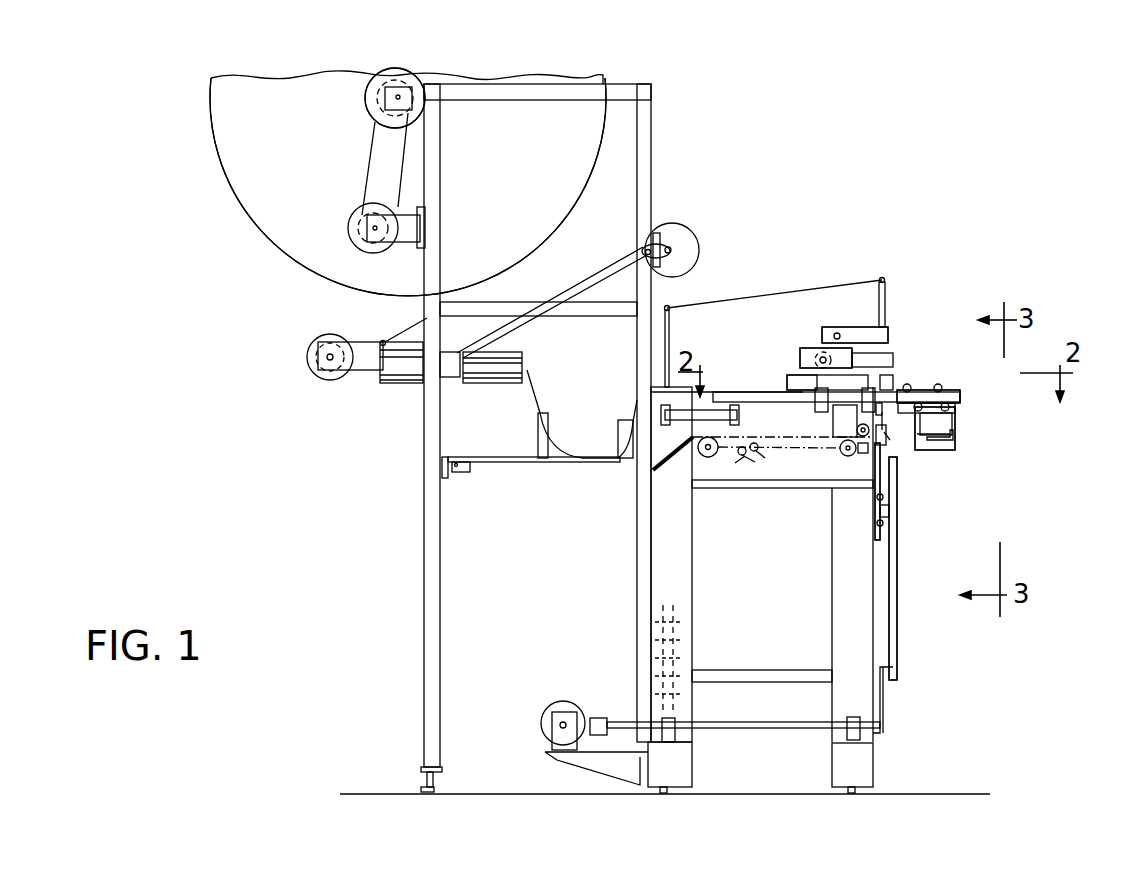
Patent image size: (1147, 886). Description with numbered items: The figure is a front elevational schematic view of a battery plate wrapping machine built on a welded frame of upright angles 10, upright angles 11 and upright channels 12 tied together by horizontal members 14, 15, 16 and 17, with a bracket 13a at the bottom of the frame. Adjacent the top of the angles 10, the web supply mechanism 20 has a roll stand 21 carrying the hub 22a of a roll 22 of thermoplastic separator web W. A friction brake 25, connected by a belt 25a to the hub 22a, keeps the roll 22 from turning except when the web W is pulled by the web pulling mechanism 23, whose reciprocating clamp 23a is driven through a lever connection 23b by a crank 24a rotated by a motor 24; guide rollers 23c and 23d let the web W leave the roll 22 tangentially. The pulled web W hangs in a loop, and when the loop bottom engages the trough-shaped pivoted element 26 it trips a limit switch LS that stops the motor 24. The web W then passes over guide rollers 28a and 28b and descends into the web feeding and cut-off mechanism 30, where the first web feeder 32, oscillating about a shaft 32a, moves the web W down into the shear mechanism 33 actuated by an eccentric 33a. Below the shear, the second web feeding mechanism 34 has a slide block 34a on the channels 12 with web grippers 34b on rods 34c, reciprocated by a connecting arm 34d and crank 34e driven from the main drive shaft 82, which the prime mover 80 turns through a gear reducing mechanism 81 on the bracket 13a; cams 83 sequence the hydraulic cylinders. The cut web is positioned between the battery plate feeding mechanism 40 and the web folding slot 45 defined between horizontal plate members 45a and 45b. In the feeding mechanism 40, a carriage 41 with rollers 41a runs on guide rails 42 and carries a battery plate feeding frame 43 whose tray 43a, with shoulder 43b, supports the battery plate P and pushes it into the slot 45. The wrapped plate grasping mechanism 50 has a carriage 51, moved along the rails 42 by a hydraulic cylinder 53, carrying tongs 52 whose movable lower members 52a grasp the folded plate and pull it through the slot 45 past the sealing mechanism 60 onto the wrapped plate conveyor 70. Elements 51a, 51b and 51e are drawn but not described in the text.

The upright angles 10 is at (440, 142).
The upright angles 11 is at (651, 165).
The upright channels 12 is at (832, 613).
The bracket 13a is at (582, 763).
The horizontal member 14 is at (503, 307).
The horizontal member 15 is at (523, 90).
The horizontal member 16 is at (723, 482).
The horizontal member 17 is at (750, 670).
The web supply mechanism 20 is at (208, 152).
The roll stand 21 is at (392, 103).
The roll 22 is at (257, 235).
The hub 22a is at (368, 115).
The web pulling mechanism 23 is at (392, 393).
The reciprocating clamp 23a is at (453, 377).
The lever connection 23b is at (577, 280).
The guide roller 23c is at (307, 368).
The guide roller 23d is at (381, 342).
The motor 24 is at (687, 248).
The crank 24a is at (670, 246).
The friction brake 25 is at (348, 228).
The belt 25a is at (360, 190).
The trough-shaped pivoted element 26 is at (502, 463).
The guide roller 28a is at (672, 310).
The guide roller 28b is at (882, 278).
The web feeding and cut-off mechanism 30 is at (895, 320).
The first web feeder 32 is at (867, 330).
The shaft 32a is at (835, 333).
The shear mechanism 33 is at (880, 397).
The eccentric 33a is at (807, 348).
The second web feeding mechanism 34 is at (907, 505).
The slide block 34a is at (887, 508).
The web grippers 34b is at (877, 433).
The rods 34c is at (893, 468).
The connecting arm 34d is at (900, 572).
The crank 34e is at (887, 700).
The battery plate feeding mechanism 40 is at (955, 375).
The carriage 41 is at (930, 385).
The rollers 41a is at (952, 389).
The guide rails 42 is at (737, 398).
The battery plate feeding frame 43 is at (955, 452).
The battery plate supporting tray 43a is at (955, 442).
The shoulder 43b is at (918, 435).
The web folding slot 45 is at (892, 445).
The horizontal plate member 45a is at (880, 430).
The horizontal plate member 45b is at (886, 433).
The wrapped plate grasping mechanism 50 is at (775, 383).
The carriage 51 is at (805, 422).
The pusher arm 51a is at (817, 418).
The pusher block 51b is at (795, 383).
The pusher link 51e is at (825, 417).
The tongs 52 is at (851, 421).
The movable lower gripping member 52a is at (835, 454).
The hydraulic cylinder 53 is at (708, 413).
The sealing mechanism 60 is at (866, 463).
The wrapped plate conveyor 70 is at (750, 453).
The prime mover 80 is at (560, 701).
The gear reducing mechanism 81 is at (560, 730).
The main drive shaft 82 is at (710, 722).
The cams 83 is at (683, 655).
The limit switch LS is at (453, 477).
The battery plate P is at (930, 432).
The web W is at (403, 333).